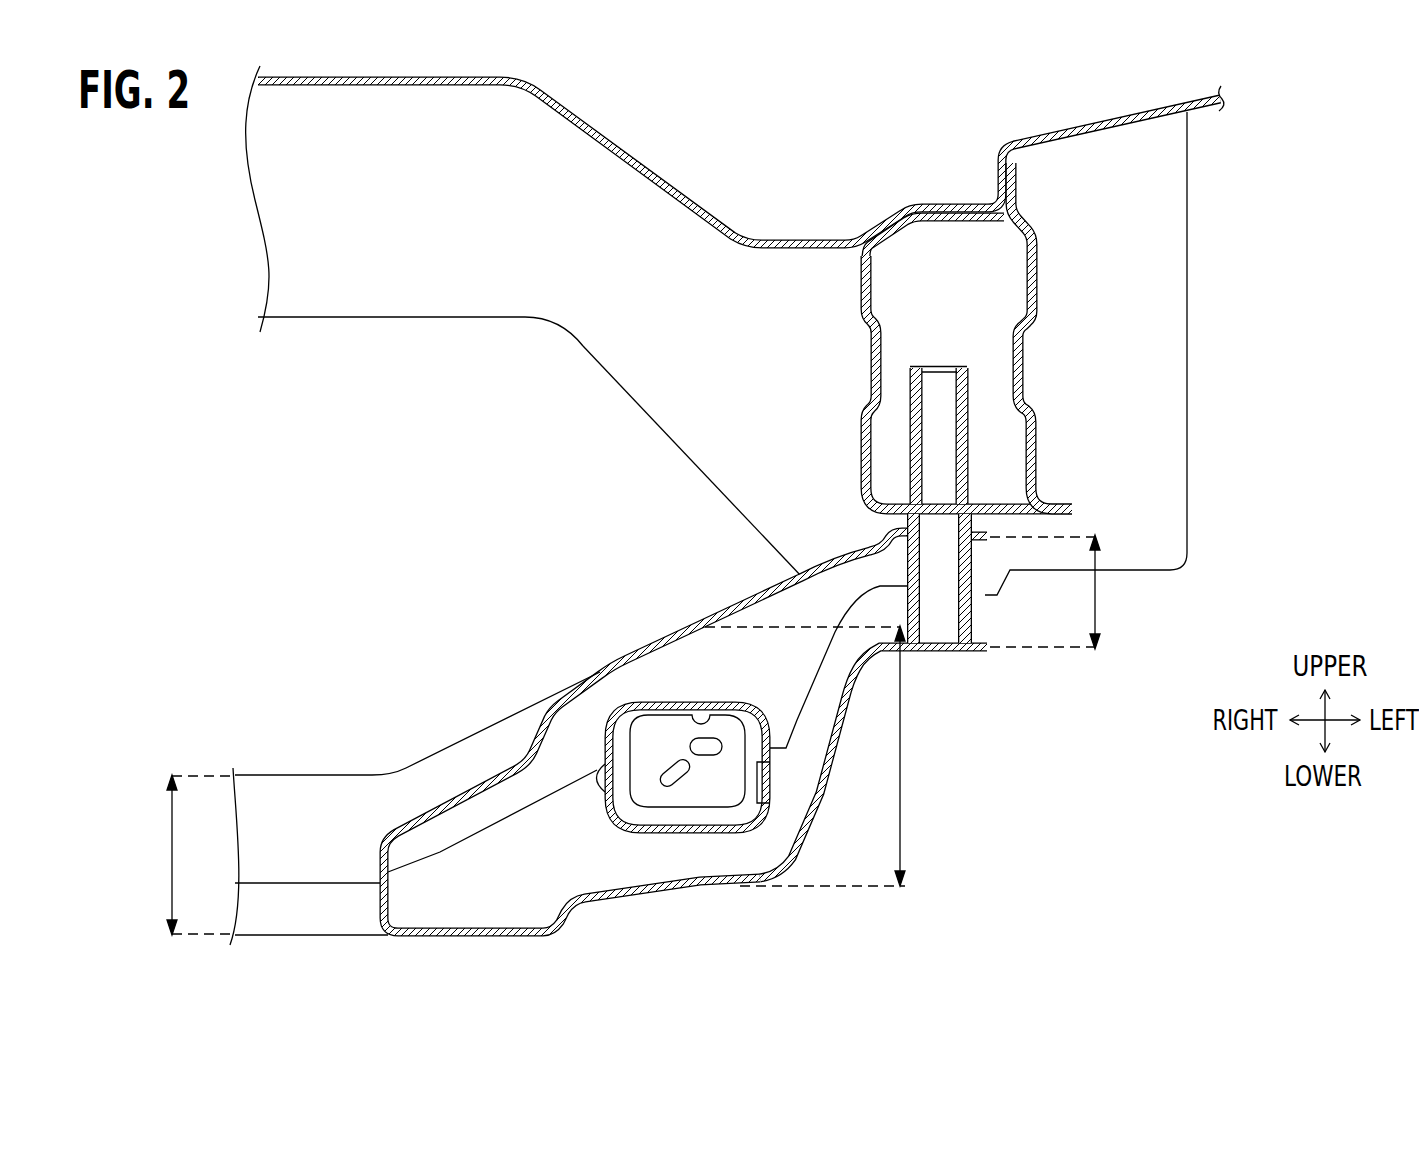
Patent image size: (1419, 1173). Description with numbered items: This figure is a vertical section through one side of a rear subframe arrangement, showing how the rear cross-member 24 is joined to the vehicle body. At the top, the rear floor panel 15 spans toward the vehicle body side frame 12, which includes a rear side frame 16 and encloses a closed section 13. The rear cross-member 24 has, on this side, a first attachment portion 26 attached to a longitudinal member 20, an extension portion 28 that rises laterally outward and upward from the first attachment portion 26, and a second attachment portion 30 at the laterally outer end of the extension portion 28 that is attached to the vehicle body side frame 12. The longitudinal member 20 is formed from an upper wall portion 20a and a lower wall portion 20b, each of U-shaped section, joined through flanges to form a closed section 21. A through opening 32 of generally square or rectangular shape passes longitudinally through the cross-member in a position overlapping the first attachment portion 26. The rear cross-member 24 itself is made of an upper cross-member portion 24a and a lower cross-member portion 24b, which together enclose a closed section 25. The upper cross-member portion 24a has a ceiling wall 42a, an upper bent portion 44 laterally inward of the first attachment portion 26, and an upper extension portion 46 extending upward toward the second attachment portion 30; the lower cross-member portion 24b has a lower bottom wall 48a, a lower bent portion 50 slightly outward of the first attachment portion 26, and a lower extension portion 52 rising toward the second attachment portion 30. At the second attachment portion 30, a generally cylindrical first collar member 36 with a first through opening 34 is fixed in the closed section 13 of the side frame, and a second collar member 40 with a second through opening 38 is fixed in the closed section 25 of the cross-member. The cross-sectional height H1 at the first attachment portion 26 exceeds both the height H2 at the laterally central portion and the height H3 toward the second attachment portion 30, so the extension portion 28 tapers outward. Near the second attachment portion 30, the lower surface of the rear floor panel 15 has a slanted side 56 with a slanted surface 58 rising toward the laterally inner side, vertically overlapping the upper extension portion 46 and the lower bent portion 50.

The vehicle body side frame 12 is at (746, 330).
The closed section 13 is at (928, 313).
The rear floor panel 15 is at (640, 153).
The rear side frame 16 is at (1028, 356).
The longitudinal member 20 is at (646, 770).
The upper wall portion 20a is at (669, 703).
The lower wall portion 20b is at (695, 830).
The closed section 21 is at (665, 816).
The rear cross-member 24 is at (608, 762).
The upper cross-member portion 24a is at (570, 688).
The lower cross-member portion 24b is at (597, 912).
The closed section 25 is at (806, 666).
The first attachment portion 26 is at (765, 810).
The extension portion 28 is at (825, 790).
The second attachment portion 30 is at (948, 506).
The through opening 32 is at (720, 703).
The first through opening 34 is at (922, 410).
The first collar member 36 is at (968, 440).
The second through opening 38 is at (960, 560).
The second collar member 40 is at (968, 615).
The ceiling wall 42a is at (282, 774).
The upper bent portion 44 is at (386, 774).
The upper extension portion 46 is at (714, 612).
The lower bottom wall 48a is at (318, 936).
The lower bent portion 50 is at (789, 870).
The lower extension portion 52 is at (834, 770).
The slanted side 56 is at (672, 461).
The slanted surface 58 is at (616, 419).
The cross-sectional height dimension at the first attachment portion H1 is at (824, 756).
The cross-sectional height dimension at the laterally central portion H2 is at (183, 855).
The cross-sectional height dimension at the second attachment portion H3 is at (1062, 592).